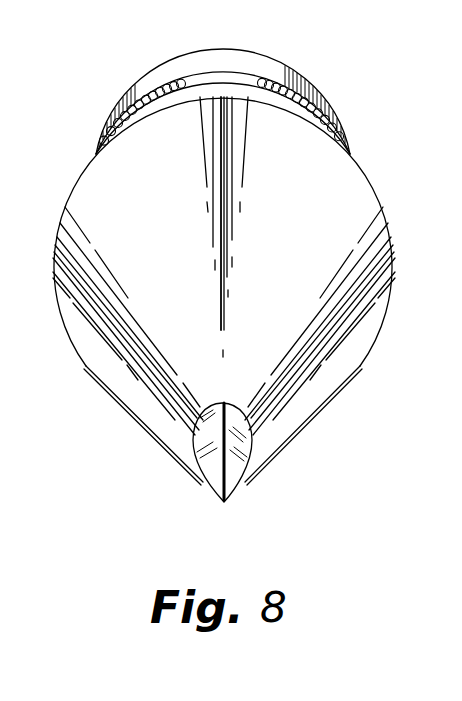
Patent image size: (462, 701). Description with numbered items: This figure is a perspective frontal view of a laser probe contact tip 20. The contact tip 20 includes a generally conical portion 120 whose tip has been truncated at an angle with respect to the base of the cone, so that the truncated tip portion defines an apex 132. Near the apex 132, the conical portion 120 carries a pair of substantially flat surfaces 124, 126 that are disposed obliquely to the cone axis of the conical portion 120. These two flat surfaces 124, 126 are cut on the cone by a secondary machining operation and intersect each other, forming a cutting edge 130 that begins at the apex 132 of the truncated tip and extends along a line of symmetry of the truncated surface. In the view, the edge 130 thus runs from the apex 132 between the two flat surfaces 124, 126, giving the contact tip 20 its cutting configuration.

The contact tip 20 is at (390, 207).
The conical portion 120 is at (93, 185).
The flat surface 124 is at (203, 447).
The flat surface 126 is at (247, 443).
The edge 130 is at (228, 477).
The apex 132 is at (222, 501).